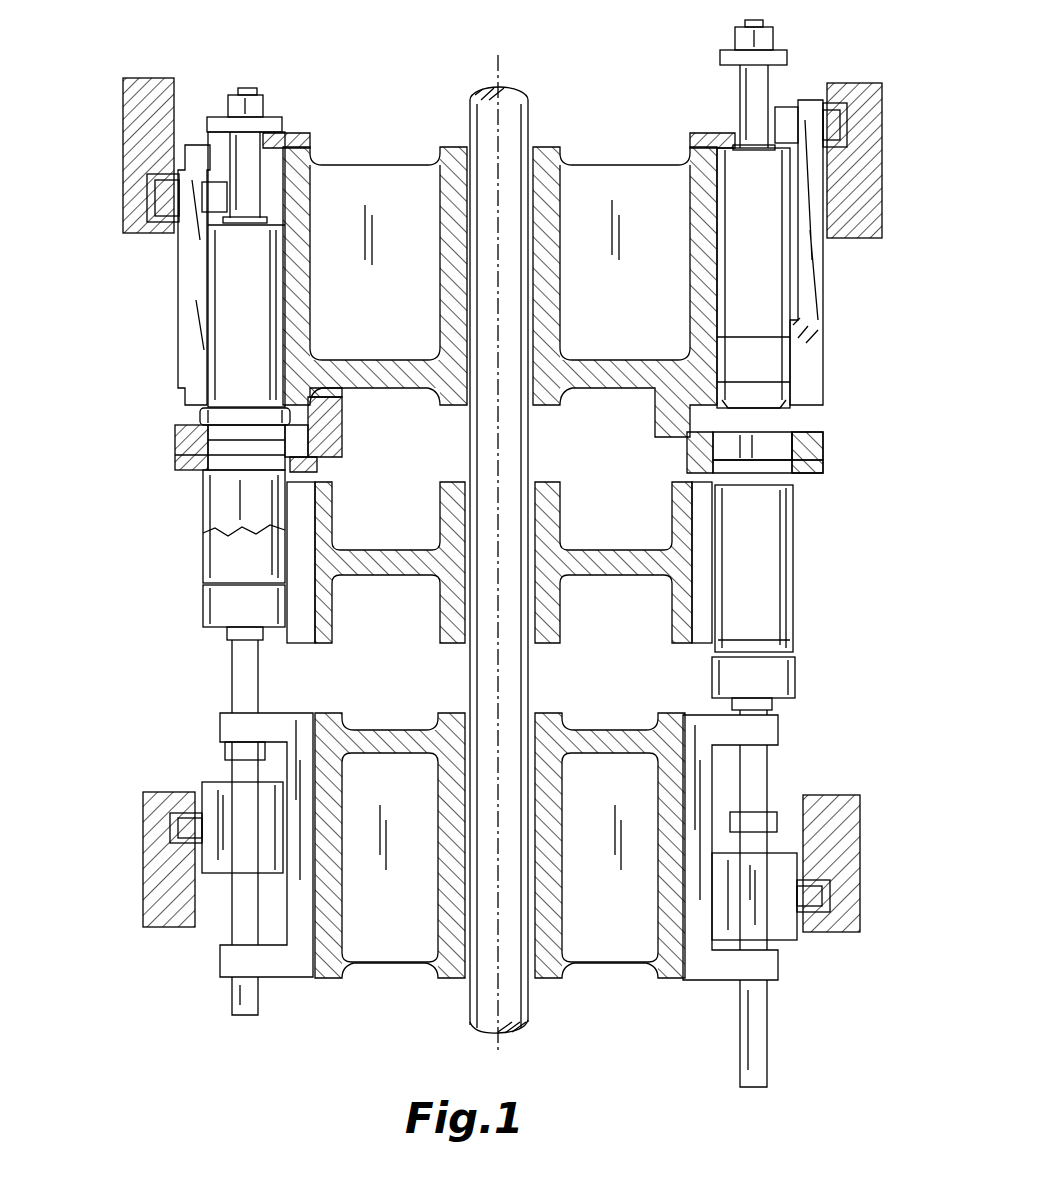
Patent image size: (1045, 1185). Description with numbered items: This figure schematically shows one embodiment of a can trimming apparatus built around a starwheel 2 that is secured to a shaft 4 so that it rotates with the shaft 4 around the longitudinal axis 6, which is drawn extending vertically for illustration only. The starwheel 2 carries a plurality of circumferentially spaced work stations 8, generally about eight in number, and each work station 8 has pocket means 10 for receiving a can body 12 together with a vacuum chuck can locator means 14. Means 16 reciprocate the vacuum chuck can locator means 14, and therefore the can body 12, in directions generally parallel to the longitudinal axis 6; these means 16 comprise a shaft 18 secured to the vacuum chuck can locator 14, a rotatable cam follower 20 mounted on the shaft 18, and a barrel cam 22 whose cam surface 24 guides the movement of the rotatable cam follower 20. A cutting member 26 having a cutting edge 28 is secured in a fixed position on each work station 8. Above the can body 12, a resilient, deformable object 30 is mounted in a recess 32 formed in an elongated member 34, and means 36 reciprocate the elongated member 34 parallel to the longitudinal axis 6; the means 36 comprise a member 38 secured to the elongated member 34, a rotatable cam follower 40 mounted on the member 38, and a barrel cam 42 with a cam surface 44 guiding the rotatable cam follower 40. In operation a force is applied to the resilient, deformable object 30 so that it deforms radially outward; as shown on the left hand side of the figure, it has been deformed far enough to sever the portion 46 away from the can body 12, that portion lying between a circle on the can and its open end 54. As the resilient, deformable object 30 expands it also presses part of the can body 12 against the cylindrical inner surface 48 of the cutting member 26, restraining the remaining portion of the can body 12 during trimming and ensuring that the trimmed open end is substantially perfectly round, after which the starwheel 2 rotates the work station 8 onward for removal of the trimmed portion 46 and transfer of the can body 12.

The starwheel 2 is at (495, 254).
The shaft 4 is at (508, 448).
The longitudinal axis 6 is at (504, 66).
The work station 8 is at (368, 135).
The pocket means 10 is at (344, 612).
The can body 12 is at (232, 553).
The vacuum chuck can locator means 14 is at (196, 612).
The means for reciprocating the vacuum chuck can locator means 16 is at (195, 765).
The shaft 18 is at (243, 660).
The rotatable cam follower 20 is at (185, 831).
The barrel cam 22 is at (183, 898).
The cam surface 24 is at (182, 842).
The cutting member 26 is at (198, 478).
The cutting edge 28 is at (176, 433).
The resilient, deformable object 30 is at (215, 444).
The recess 32 is at (197, 468).
The elongated member 34 is at (255, 317).
The means for reciprocating the elongated member 36 is at (216, 62).
The member 38 is at (192, 325).
The rotatable cam follower 40 is at (160, 195).
The barrel cam 42 is at (161, 123).
The cam surface 44 is at (165, 213).
The portion 46 is at (200, 414).
The cylindrical inner surface 48 is at (325, 460).
The open end 54 is at (310, 440).